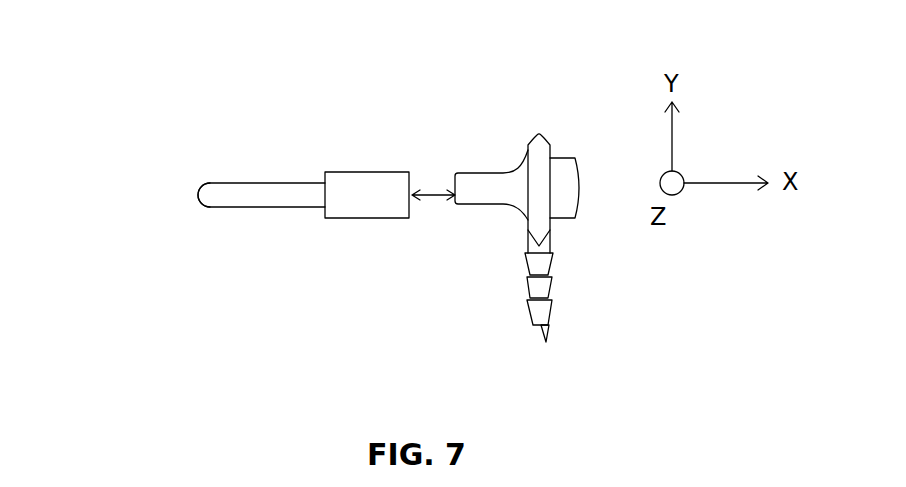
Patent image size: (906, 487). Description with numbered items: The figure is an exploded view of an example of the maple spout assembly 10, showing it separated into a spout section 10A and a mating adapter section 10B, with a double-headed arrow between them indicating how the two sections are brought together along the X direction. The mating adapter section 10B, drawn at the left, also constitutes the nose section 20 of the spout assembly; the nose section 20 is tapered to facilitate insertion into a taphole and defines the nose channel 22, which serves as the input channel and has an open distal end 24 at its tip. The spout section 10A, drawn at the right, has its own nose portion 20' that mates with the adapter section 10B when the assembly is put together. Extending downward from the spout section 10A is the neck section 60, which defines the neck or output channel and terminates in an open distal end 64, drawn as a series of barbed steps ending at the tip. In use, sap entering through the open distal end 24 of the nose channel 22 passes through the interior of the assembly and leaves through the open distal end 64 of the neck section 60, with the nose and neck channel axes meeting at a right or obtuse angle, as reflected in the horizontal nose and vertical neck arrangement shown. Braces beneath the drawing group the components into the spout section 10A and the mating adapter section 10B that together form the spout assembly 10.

The maple spout assembly 10 is at (142, 57).
The spout section 10A is at (457, 335).
The mating adapter section 10B is at (420, 263).
The nose section 20 is at (279, 195).
The nose portion of spout section 20' is at (496, 175).
The nose channel 22 is at (237, 198).
The open distal end 24 is at (202, 192).
The neck section 60 is at (577, 258).
The open distal end of neck channel 64 is at (547, 338).